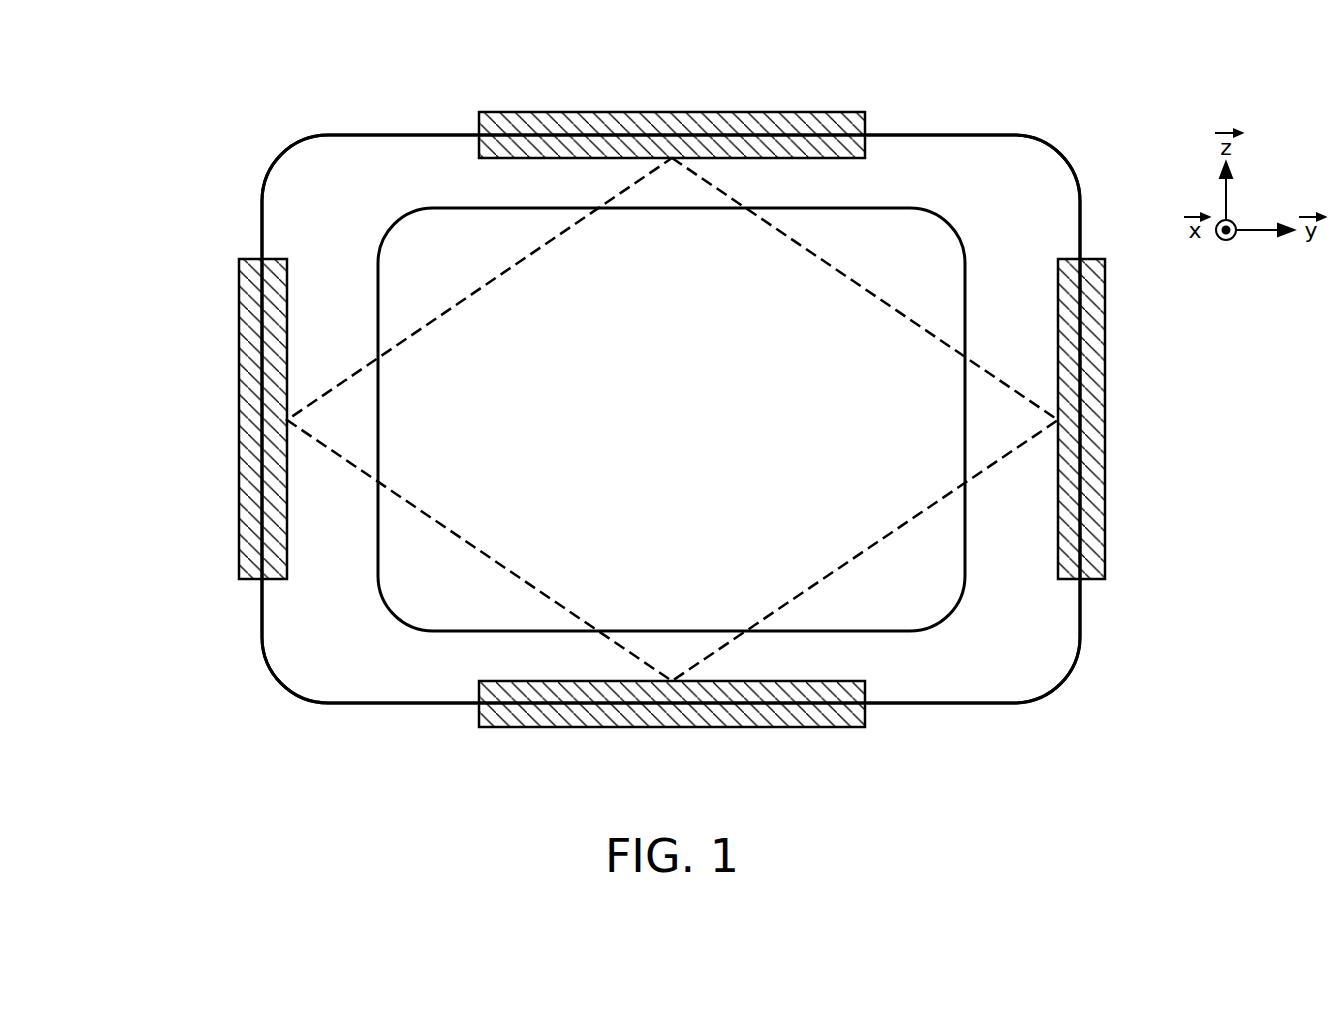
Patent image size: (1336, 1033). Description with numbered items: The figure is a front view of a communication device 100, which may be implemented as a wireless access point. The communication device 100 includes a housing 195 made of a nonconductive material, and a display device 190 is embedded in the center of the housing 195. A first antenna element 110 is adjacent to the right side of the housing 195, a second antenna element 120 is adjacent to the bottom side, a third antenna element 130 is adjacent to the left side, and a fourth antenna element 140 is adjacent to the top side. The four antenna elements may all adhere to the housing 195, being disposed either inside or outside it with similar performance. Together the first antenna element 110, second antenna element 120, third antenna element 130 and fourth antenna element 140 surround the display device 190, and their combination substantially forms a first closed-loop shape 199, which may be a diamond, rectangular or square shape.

The communication device 100 is at (93, 101).
The first antenna element 110 is at (1093, 470).
The second antenna element 120 is at (705, 727).
The third antenna element 130 is at (244, 471).
The fourth antenna element 140 is at (673, 112).
The display device 190 is at (950, 225).
The housing 195 is at (983, 135).
The first closed-loop shape 199 is at (863, 290).